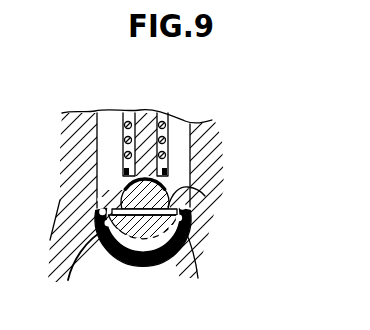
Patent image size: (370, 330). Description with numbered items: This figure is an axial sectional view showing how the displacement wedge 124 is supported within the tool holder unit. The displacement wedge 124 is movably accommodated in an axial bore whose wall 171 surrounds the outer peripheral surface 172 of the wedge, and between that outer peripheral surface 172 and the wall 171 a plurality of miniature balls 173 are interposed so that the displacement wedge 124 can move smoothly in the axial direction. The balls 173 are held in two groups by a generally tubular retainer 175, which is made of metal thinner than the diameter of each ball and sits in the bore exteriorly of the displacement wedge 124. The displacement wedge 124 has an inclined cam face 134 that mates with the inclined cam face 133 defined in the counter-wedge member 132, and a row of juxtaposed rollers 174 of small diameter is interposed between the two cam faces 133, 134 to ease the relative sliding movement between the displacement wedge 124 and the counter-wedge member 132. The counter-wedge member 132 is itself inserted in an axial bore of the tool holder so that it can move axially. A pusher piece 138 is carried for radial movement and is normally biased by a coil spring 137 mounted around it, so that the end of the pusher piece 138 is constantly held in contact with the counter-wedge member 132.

The displacement wedge 124 is at (92, 250).
The counter-wedge member 132 is at (123, 190).
The inclined cam face 133 is at (187, 236).
The inclined cam face 134 is at (115, 249).
The coil spring 137 is at (170, 133).
The pusher piece 138 is at (143, 116).
The wall 171 is at (147, 252).
The outer peripheral surface 172 is at (180, 245).
The miniature balls 173 is at (170, 252).
The rollers 174 is at (203, 192).
The tubular retainer 175 is at (100, 216).